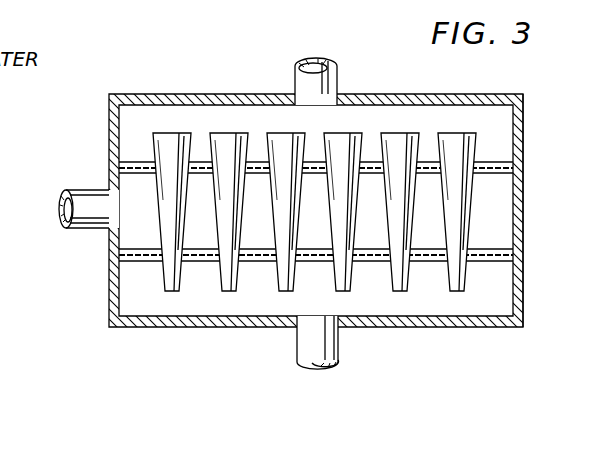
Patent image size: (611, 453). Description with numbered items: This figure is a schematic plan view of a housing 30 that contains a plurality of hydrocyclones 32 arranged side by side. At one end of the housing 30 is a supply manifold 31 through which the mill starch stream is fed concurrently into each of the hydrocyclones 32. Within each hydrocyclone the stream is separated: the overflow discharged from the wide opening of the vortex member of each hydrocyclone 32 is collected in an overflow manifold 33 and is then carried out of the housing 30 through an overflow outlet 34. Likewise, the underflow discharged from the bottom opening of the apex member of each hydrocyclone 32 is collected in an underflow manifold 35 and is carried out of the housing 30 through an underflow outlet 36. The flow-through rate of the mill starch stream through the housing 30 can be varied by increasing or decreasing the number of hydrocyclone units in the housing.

The housing 30 is at (204, 95).
The supply manifold 31 is at (85, 229).
The hydrocyclones 32 is at (228, 135).
The overflow manifold 33 is at (500, 137).
The overflow outlet 34 is at (338, 83).
The underflow manifold 35 is at (505, 294).
The underflow outlet 36 is at (339, 349).